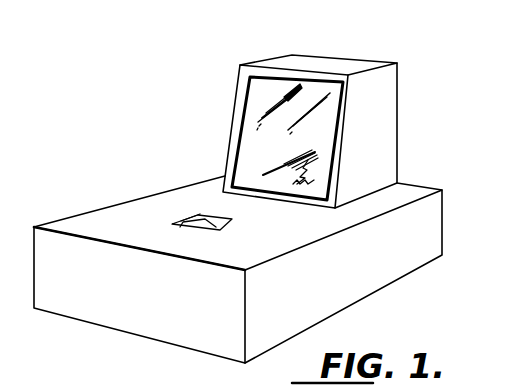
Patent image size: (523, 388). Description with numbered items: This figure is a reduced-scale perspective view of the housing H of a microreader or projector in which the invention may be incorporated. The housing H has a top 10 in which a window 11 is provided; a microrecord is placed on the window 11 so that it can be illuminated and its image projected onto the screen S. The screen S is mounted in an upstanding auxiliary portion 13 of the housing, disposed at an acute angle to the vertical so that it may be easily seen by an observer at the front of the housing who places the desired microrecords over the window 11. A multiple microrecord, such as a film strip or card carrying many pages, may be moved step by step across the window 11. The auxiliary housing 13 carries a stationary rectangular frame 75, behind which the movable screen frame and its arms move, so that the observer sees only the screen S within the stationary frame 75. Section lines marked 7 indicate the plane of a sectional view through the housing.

The top 10 is at (83, 215).
The window 11 is at (230, 219).
The upstanding auxiliary portion of the housing 13 is at (387, 142).
The stationary rectangular frame 75 is at (240, 108).
The screen S is at (255, 138).
The housing H is at (440, 222).
The section line 7 is at (338, 25).